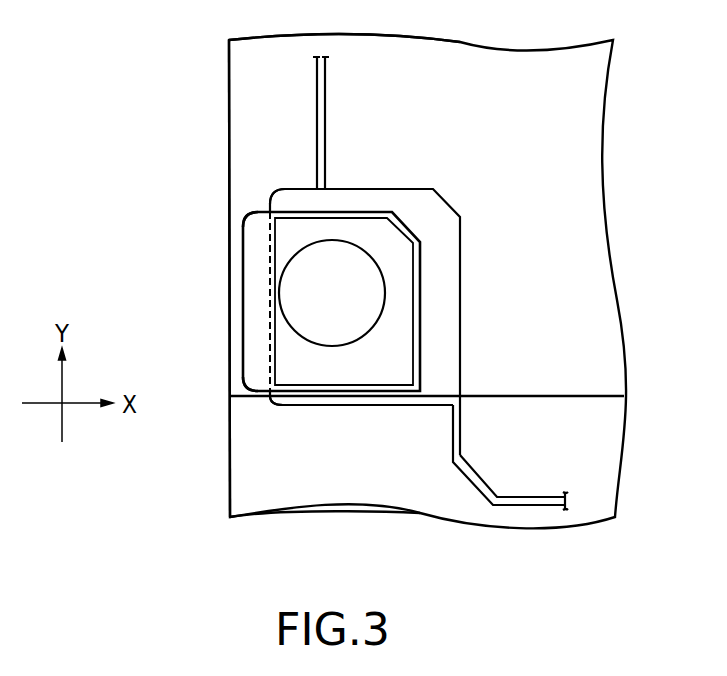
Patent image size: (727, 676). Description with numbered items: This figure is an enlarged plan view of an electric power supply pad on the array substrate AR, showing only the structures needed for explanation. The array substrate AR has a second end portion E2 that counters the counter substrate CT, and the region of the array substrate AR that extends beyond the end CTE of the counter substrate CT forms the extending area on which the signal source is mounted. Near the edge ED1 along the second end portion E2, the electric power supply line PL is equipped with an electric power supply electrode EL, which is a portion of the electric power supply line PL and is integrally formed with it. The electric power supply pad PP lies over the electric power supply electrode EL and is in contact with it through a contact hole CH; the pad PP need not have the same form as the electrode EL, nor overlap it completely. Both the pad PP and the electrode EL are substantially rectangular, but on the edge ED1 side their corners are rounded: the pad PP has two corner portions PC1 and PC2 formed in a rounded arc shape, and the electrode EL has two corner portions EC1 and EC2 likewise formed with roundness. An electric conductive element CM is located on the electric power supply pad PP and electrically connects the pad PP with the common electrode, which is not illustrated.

The counter substrate CT is at (620, 347).
The second end portion E2 is at (250, 63).
The edge ED1 is at (222, 160).
The array substrate AR is at (240, 500).
The end of the counter substrate CTE is at (533, 408).
The electric power supply electrode EL is at (460, 243).
The corner portion EC2 is at (272, 180).
The corner portion EC1 is at (271, 410).
The electric power supply line PL is at (325, 98).
The contact hole CH is at (420, 350).
The corner portion PC2 is at (234, 208).
The corner portion PC1 is at (234, 388).
The electric power supply pad PP is at (420, 306).
The electric conductive element CM is at (352, 345).